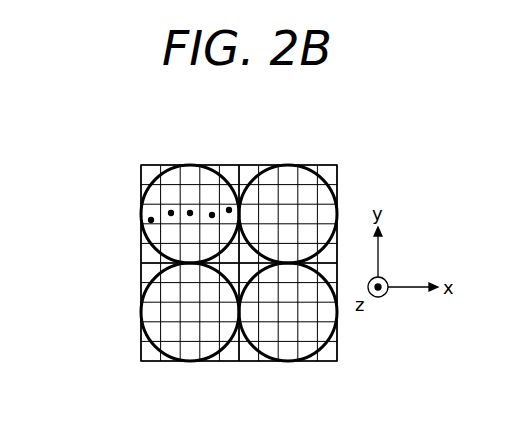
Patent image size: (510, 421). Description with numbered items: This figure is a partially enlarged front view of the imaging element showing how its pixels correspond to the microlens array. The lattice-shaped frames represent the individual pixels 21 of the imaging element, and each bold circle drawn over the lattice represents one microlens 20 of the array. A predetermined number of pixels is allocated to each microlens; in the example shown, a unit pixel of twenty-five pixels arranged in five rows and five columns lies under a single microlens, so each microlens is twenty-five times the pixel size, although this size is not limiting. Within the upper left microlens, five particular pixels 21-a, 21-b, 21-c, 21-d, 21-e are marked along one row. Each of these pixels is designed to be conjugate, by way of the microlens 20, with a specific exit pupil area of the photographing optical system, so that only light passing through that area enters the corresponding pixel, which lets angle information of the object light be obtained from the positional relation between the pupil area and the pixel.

The microlens 20 is at (152, 250).
The pixel 21 is at (333, 163).
The pixel 21-a is at (229, 210).
The pixel 21-b is at (212, 215).
The pixel 21-c is at (190, 213).
The pixel 21-d is at (171, 213).
The pixel 21-e is at (151, 220).